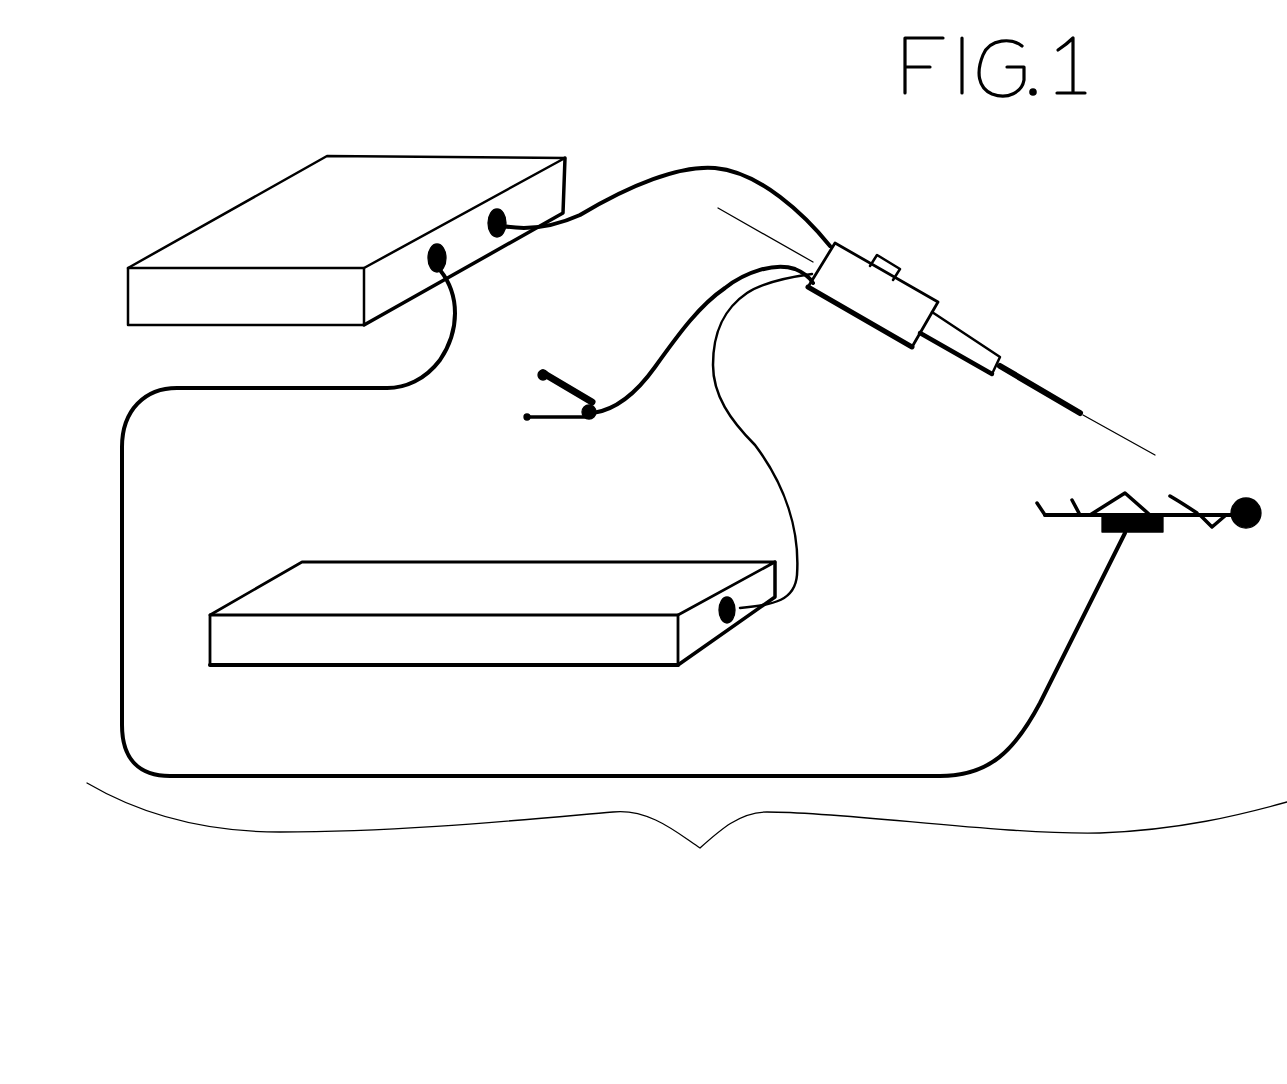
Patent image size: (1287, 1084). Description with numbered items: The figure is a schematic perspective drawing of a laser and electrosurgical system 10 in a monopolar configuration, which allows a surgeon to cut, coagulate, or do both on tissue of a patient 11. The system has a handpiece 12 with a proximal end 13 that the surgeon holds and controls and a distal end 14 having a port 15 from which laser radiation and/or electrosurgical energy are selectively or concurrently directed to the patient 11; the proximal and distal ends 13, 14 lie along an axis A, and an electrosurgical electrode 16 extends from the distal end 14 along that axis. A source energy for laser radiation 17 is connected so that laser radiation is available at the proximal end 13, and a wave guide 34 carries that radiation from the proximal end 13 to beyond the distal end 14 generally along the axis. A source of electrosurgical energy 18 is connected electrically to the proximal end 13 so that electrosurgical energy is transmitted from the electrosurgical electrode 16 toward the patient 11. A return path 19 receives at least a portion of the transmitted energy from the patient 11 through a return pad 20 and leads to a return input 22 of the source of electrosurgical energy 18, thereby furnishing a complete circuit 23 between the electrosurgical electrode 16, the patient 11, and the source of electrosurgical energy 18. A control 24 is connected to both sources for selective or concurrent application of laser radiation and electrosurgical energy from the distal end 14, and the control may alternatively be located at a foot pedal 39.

The laser and electrosurgical system 10 is at (672, 132).
The patient 11 is at (1257, 523).
The handpiece 12 is at (873, 327).
The proximal end 13 is at (834, 242).
The distal end 14 is at (1003, 357).
The port 15 is at (997, 375).
The electrosurgical electrode 16 is at (1050, 390).
The source energy for laser radiation 17 is at (530, 560).
The source of electrosurgical energy 18 is at (393, 156).
The return path 19 is at (1043, 700).
The return pad 20 is at (1140, 532).
The return input 22 is at (447, 255).
The complete circuit 23 is at (687, 834).
The control 24 is at (897, 257).
The wave guide 34 is at (780, 493).
The foot pedal 39 is at (537, 378).